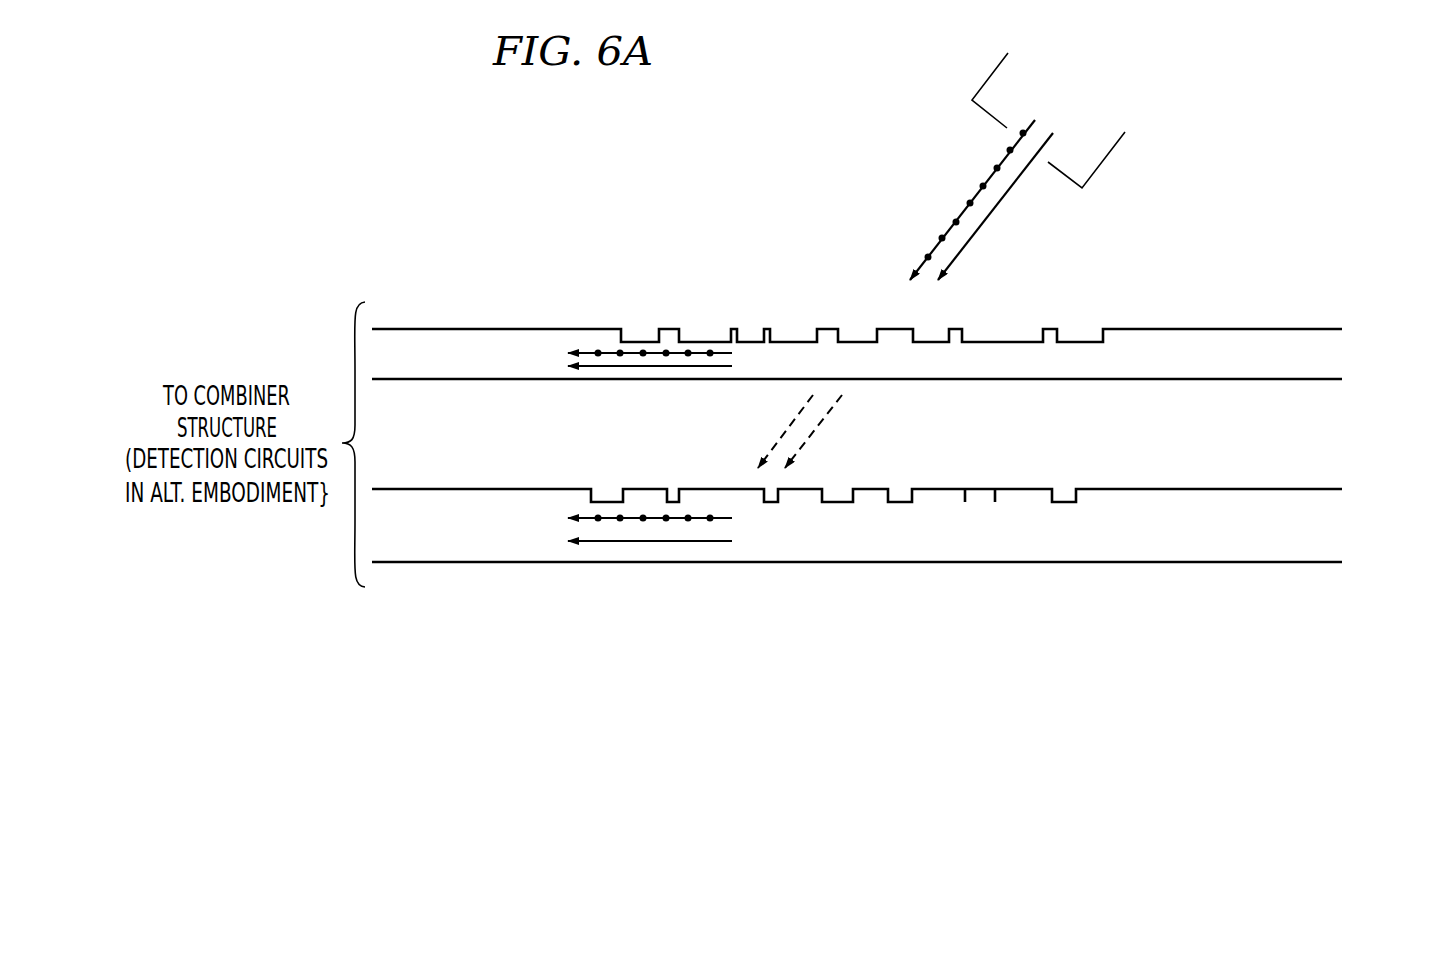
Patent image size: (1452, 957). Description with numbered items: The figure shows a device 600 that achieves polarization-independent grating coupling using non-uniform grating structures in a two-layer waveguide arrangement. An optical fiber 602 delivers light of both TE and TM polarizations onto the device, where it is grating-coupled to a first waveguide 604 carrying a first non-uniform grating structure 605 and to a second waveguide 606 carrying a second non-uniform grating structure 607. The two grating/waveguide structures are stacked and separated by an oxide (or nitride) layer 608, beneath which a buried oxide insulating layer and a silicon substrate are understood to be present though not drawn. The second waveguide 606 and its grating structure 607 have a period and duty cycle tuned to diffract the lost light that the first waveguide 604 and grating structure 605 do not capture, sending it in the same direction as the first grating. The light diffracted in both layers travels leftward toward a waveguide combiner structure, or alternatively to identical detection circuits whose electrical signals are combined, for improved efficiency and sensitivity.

The device 600 is at (650, 170).
The optical fiber 602 is at (987, 80).
The first waveguide 604 is at (1336, 358).
The first non-uniform grating structure 605 is at (620, 322).
The second waveguide 606 is at (1336, 542).
The second non-uniform grating structure 607 is at (625, 478).
The oxide layer 608 is at (1336, 458).